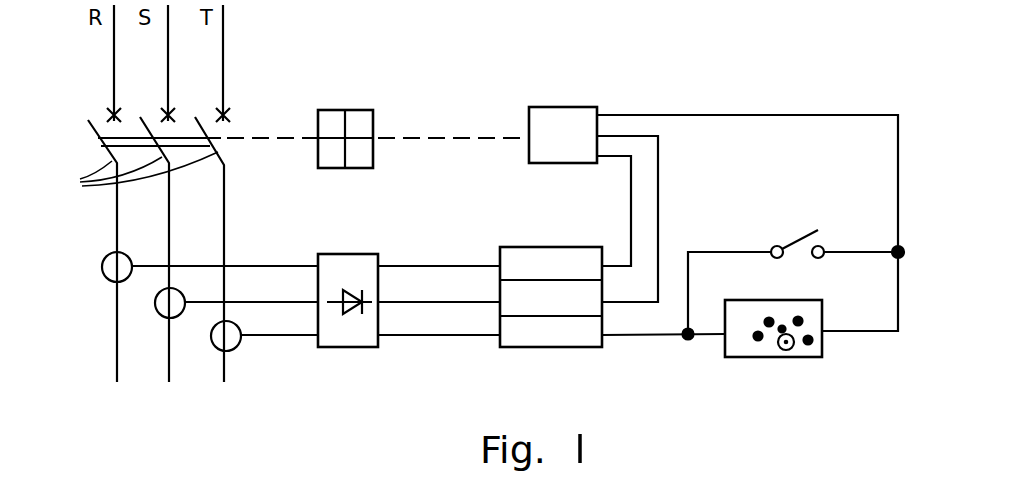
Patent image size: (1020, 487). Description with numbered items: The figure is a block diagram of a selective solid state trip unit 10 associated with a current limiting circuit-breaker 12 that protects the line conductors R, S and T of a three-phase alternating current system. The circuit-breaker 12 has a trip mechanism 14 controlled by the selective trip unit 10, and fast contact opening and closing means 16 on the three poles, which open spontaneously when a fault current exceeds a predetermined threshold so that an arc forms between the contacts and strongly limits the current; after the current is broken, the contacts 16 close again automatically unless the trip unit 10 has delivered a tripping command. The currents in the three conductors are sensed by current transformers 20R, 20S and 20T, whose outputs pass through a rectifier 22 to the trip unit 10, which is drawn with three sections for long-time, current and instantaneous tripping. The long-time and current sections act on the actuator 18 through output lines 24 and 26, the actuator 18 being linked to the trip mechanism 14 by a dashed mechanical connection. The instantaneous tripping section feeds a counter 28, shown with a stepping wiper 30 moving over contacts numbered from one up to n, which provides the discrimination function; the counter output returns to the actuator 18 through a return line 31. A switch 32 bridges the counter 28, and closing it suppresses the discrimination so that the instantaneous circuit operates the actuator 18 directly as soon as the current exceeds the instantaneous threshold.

The selective solid state trip unit 10 is at (552, 347).
The current limiting circuit-breaker 12 is at (86, 137).
The trip mechanism 14 is at (345, 110).
The fast contact opening and closing means 16 is at (136, 173).
The actuator 18 is at (563, 135).
The current transformer 20R is at (112, 284).
The current transformer 20S is at (165, 318).
The current transformer 20T is at (223, 352).
The rectifier 22 is at (345, 347).
The long-time tripping output line 24 is at (631, 183).
The current tripping output line 26 is at (659, 213).
The counter 28 is at (753, 357).
The counter wiper 30 is at (790, 350).
The return line 31 is at (810, 115).
The switch 32 is at (797, 232).